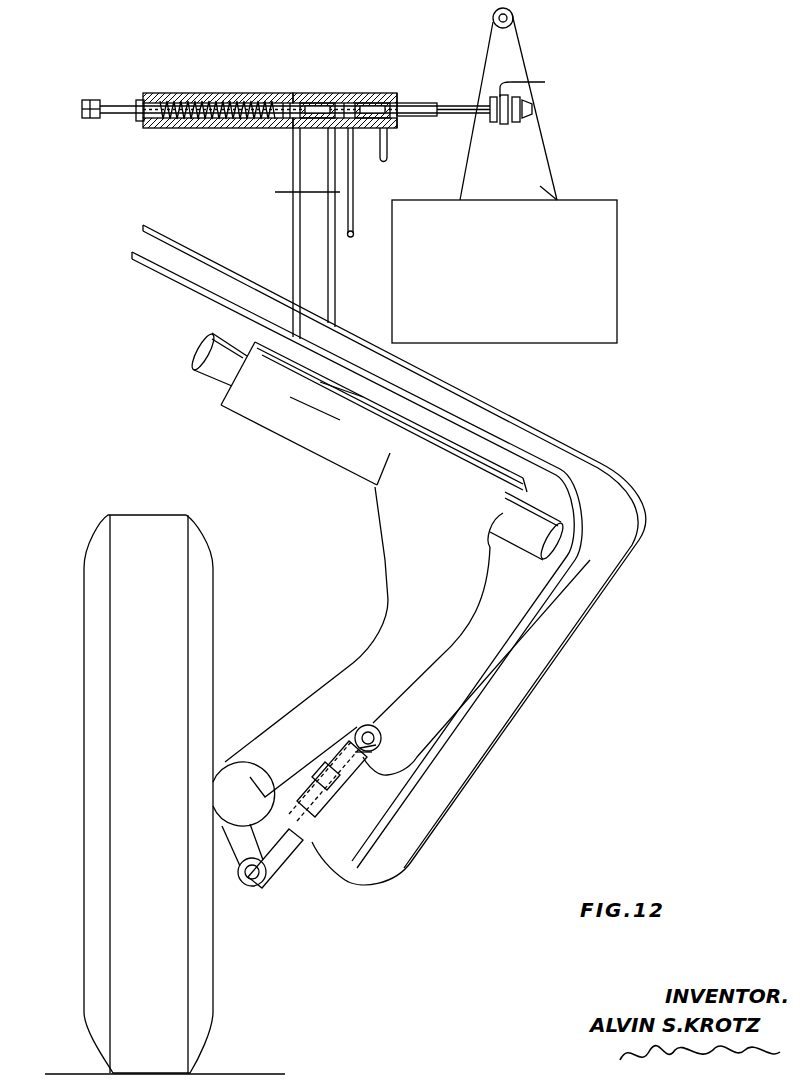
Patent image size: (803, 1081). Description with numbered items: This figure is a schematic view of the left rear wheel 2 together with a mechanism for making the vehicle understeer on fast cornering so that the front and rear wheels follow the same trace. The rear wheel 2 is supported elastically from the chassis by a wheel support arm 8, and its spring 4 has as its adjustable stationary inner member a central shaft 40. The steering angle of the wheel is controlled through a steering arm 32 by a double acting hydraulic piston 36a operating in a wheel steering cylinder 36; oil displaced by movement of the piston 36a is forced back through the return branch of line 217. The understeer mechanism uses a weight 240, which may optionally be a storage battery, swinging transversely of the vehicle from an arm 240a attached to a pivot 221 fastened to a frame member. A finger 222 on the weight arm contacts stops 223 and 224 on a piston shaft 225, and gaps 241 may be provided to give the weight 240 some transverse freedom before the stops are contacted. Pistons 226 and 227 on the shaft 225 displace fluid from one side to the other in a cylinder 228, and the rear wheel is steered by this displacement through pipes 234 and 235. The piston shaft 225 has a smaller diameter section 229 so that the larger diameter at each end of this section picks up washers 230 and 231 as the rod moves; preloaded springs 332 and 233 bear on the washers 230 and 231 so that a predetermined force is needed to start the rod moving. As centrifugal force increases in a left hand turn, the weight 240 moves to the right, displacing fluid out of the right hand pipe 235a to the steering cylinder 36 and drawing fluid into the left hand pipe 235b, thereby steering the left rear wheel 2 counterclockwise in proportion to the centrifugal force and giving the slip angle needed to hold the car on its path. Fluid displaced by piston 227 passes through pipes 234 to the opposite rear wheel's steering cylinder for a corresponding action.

The rear wheel 2 is at (150, 530).
The spring 4 is at (297, 428).
The wheel support arm 8 is at (353, 665).
The steering arm 32 is at (240, 850).
The wheel steering cylinder 36 is at (317, 823).
The piston 36a is at (330, 792).
The central shaft 40 is at (197, 353).
The line 217 is at (134, 251).
The pivot 221 is at (515, 18).
The finger 222 is at (501, 123).
The stop 223 is at (490, 124).
The stop 224 is at (520, 126).
The piston shaft 225 is at (465, 113).
The piston 226 is at (308, 104).
The piston 227 is at (366, 104).
The cylinder 228 is at (285, 93).
The smaller diameter section 229 is at (213, 100).
The washer 230 is at (237, 127).
The washer 231 is at (168, 97).
The spring 233 is at (233, 118).
The pipe 234 is at (372, 157).
The pipe 235 is at (283, 190).
The right hand pipe 235a is at (335, 278).
The left hand pipe 235b is at (297, 260).
The weight 240 is at (612, 302).
The arm 240a is at (540, 186).
The gap 241 is at (500, 98).
The spring 332 is at (187, 121).